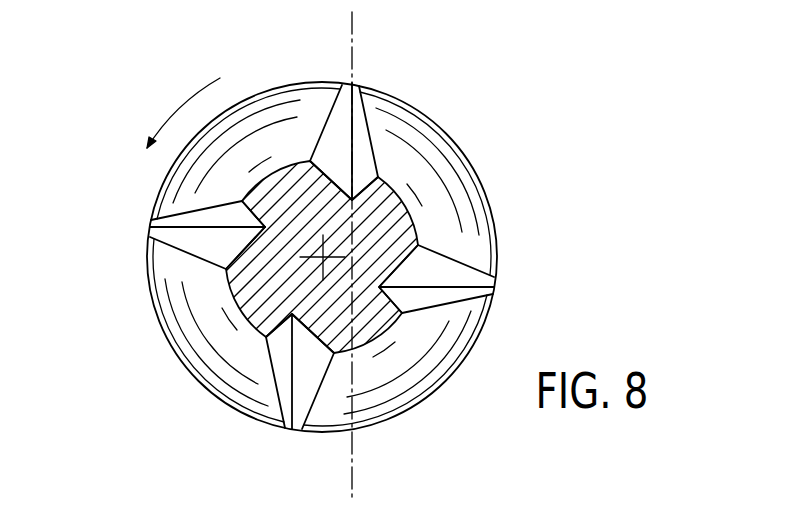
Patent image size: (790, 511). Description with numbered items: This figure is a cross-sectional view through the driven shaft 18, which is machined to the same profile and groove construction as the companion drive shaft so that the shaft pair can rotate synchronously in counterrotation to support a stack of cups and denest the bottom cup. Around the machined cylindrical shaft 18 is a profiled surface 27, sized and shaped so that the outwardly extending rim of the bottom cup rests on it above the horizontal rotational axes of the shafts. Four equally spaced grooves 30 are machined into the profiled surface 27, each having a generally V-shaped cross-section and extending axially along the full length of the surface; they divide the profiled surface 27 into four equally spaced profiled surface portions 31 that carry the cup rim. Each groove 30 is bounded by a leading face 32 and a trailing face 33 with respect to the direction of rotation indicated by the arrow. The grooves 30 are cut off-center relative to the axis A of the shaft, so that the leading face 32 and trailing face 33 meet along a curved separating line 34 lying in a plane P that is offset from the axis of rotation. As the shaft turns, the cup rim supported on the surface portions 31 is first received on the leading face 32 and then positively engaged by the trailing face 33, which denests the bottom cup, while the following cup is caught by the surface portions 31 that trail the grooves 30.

The driven shaft 18 is at (494, 181).
The profiled surface 27 is at (435, 168).
The grooves 30 is at (432, 270).
The profiled surface portions 31 is at (280, 110).
The leading face 32 is at (332, 128).
The trailing face 33 is at (371, 140).
The curved separating line 34 is at (356, 107).
The axis A is at (316, 247).
The plane P is at (352, 466).